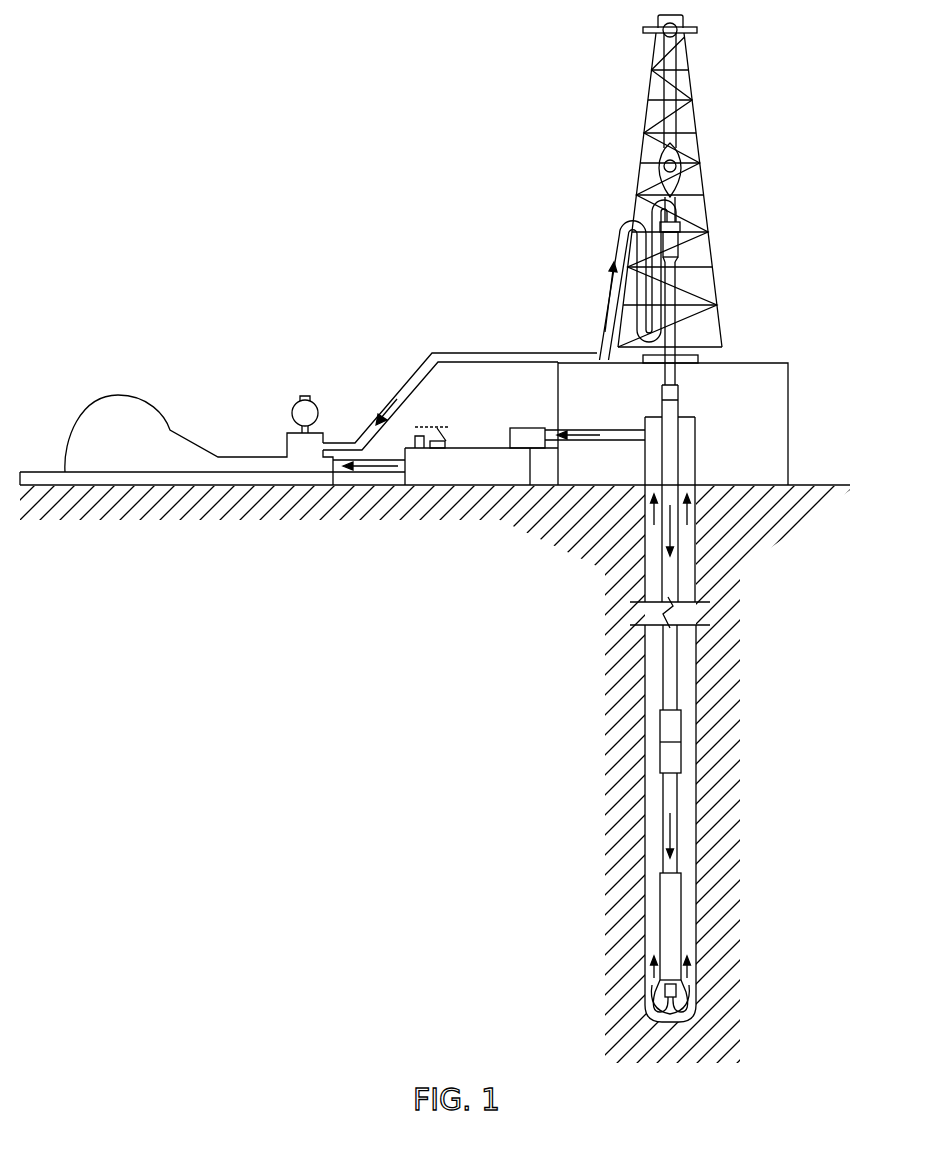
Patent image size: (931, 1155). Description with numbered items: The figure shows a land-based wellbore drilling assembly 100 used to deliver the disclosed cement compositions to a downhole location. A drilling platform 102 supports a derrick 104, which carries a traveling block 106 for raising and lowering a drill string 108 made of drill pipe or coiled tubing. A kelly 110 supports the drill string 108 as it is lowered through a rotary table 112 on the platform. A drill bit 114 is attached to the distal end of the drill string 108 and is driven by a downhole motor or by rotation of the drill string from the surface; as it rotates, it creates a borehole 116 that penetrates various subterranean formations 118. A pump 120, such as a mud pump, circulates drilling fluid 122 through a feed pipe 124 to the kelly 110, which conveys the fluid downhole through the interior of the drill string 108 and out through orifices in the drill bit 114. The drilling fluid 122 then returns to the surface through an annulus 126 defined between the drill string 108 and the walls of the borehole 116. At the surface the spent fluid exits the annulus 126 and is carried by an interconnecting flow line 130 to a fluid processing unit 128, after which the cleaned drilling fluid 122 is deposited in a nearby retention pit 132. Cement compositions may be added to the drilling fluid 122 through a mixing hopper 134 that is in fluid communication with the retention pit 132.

The wellbore drilling assembly 100 is at (403, 101).
The drilling platform 102 is at (789, 368).
The derrick 104 is at (697, 113).
The traveling block 106 is at (680, 152).
The drill string 108 is at (676, 582).
The kelly 110 is at (673, 275).
The rotary table 112 is at (700, 357).
The drill bit 114 is at (688, 997).
The borehole 116 is at (700, 670).
The subterranean formations 118 is at (545, 704).
The pump 120 is at (132, 454).
The drilling fluid 122 is at (352, 444).
The feed pipe 124 is at (455, 352).
The annulus 126 is at (687, 826).
The fluid processing unit 128 is at (523, 428).
The interconnecting flow line 130 is at (637, 441).
The retention pit 132 is at (508, 478).
The mixing hopper 134 is at (432, 436).